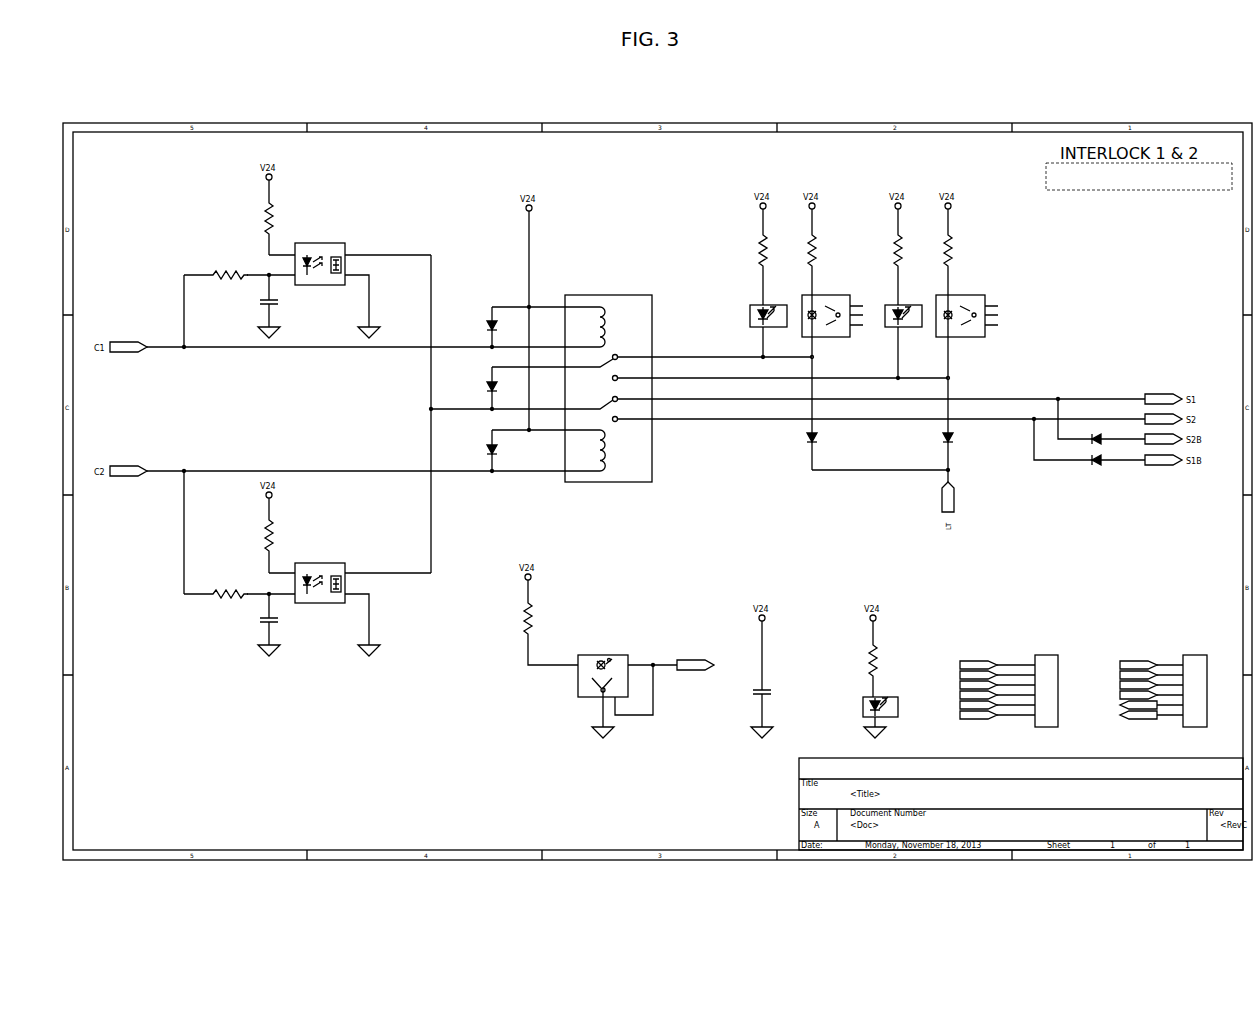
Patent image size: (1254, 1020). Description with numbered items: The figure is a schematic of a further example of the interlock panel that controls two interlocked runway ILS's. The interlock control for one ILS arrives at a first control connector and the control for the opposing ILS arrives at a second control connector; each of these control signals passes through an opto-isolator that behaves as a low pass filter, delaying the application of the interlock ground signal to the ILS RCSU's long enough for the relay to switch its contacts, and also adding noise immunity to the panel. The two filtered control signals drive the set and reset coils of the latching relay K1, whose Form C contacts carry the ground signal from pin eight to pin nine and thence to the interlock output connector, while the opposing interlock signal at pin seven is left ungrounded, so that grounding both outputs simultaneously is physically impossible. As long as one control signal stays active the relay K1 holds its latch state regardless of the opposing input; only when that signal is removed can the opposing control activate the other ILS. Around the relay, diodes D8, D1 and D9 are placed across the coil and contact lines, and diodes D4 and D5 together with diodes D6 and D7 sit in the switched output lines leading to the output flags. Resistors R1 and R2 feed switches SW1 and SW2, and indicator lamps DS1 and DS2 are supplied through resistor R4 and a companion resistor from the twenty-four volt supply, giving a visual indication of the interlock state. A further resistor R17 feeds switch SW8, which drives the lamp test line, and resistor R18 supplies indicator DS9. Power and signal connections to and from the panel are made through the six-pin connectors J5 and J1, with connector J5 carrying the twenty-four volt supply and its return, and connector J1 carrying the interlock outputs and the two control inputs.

The resistor R1 is at (825, 244).
The resistor R2 is at (958, 244).
The resistor R4 is at (908, 249).
The resistor R17 is at (548, 614).
The resistor R18 is at (883, 651).
The relay K1 is at (788, 394).
The diode D1 is at (484, 389).
The diode D4 is at (804, 439).
The diode D5 is at (940, 439).
The diode D6 is at (1094, 434).
The diode D7 is at (1094, 465).
The diode D8 is at (484, 327).
The diode D9 is at (484, 450).
The LED indicator DS1 is at (768, 327).
The LED indicator DS2 is at (903, 338).
The LED indicator DS9 is at (880, 713).
The switch SW1 is at (835, 377).
The switch SW2 is at (970, 378).
The switch SW8 is at (647, 691).
The connector CONN6 J5 is at (1000, 691).
The connector CONN6 J1 is at (1157, 691).